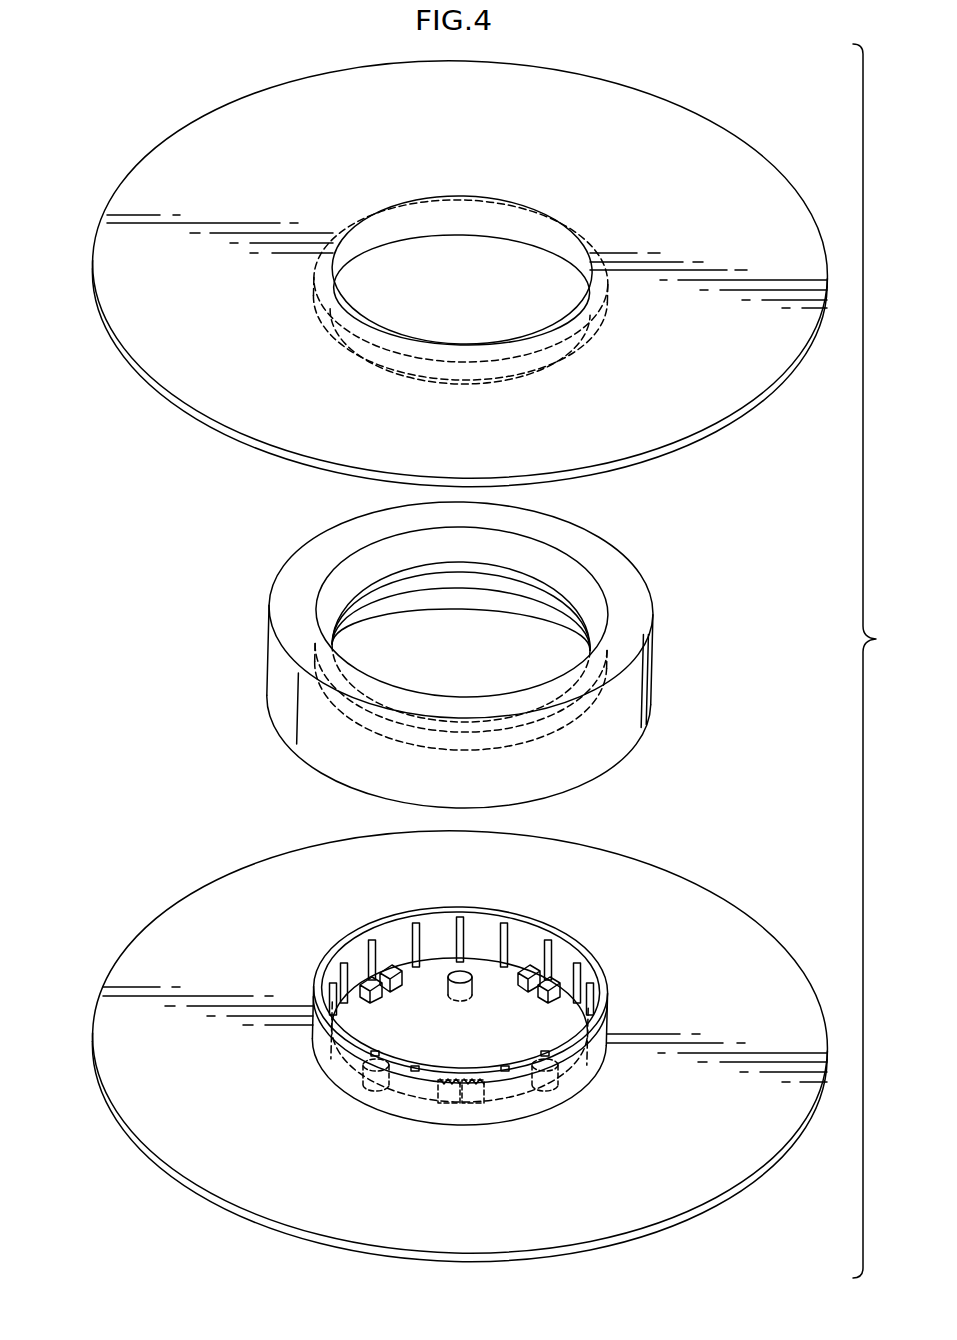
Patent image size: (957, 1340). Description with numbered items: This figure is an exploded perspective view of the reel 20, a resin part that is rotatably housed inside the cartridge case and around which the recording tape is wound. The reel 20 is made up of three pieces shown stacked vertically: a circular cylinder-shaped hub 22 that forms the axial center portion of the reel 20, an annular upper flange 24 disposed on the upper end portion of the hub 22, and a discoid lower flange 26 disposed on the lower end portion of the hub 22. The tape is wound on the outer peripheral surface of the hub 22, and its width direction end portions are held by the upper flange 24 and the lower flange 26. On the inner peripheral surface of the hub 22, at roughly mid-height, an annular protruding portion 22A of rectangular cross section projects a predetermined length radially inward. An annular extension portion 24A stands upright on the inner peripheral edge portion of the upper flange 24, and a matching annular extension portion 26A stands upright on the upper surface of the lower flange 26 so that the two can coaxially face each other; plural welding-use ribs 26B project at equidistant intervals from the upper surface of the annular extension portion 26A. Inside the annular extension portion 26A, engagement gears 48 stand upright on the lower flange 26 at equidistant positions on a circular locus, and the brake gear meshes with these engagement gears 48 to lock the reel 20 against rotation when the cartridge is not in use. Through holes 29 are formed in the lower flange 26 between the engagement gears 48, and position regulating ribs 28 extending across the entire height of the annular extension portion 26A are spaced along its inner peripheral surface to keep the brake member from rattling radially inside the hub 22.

The reel 20 is at (723, 82).
The hub 22 is at (489, 652).
The protruding portion 22A is at (548, 598).
The upper flange 24 is at (459, 273).
The annular extension portion 24A is at (467, 215).
The lower flange 26 is at (740, 932).
The annular extension portion 26A is at (605, 1027).
The welding-use ribs 26B is at (358, 936).
The position regulating ribs 28 is at (497, 1016).
The through holes 29 is at (455, 973).
The engagement gears 48 is at (388, 967).